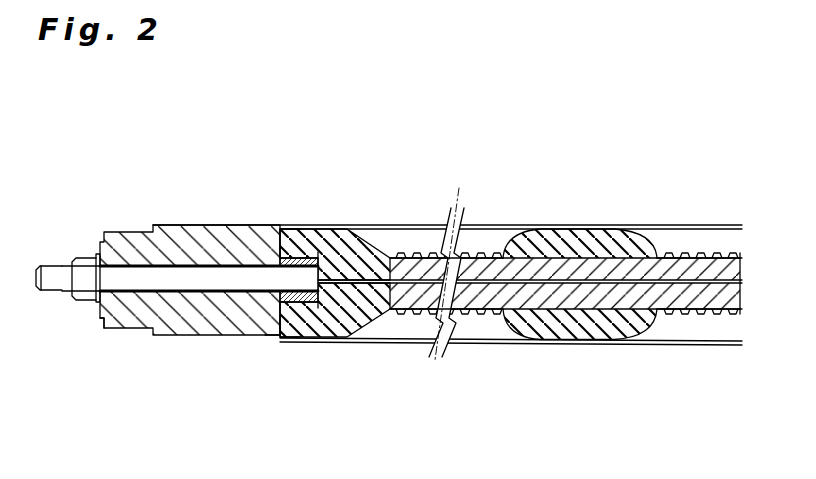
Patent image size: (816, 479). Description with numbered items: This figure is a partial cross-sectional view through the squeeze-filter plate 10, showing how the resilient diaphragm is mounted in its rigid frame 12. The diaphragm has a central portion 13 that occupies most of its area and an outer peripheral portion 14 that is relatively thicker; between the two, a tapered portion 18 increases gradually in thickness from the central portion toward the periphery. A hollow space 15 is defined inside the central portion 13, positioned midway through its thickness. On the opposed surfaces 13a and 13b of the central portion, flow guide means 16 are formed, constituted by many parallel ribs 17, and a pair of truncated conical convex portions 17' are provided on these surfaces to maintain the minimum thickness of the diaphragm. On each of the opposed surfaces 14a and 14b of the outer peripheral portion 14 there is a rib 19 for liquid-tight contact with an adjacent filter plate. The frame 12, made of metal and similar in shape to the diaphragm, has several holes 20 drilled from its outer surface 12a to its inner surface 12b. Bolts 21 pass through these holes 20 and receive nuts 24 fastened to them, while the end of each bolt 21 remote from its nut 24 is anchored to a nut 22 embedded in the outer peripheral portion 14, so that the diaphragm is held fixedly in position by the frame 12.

The squeeze-filter plate 10 is at (426, 210).
The frame 12 is at (180, 235).
The outer surface of the frame 12a is at (99, 306).
The inner surface of the frame 12b is at (279, 329).
The central portion 13 is at (693, 253).
The opposed surface of the central portion 13a is at (657, 256).
The opposed surface of the central portion 13b is at (729, 316).
The outer peripheral portion 14 is at (332, 235).
The opposed surface of the outer peripheral portion 14a is at (288, 230).
The opposed surface of the outer peripheral portion 14b is at (286, 337).
The hollow space 15 is at (665, 312).
The flow guide means 16 is at (726, 249).
The parallel ribs 17 is at (456, 278).
The convex portions 17' is at (580, 270).
The tapered portion 18 is at (358, 313).
The rib 19 is at (310, 245).
The holes 20 is at (200, 293).
The bolts 21 is at (62, 264).
The nut 22 is at (286, 257).
The nuts 24 is at (81, 299).